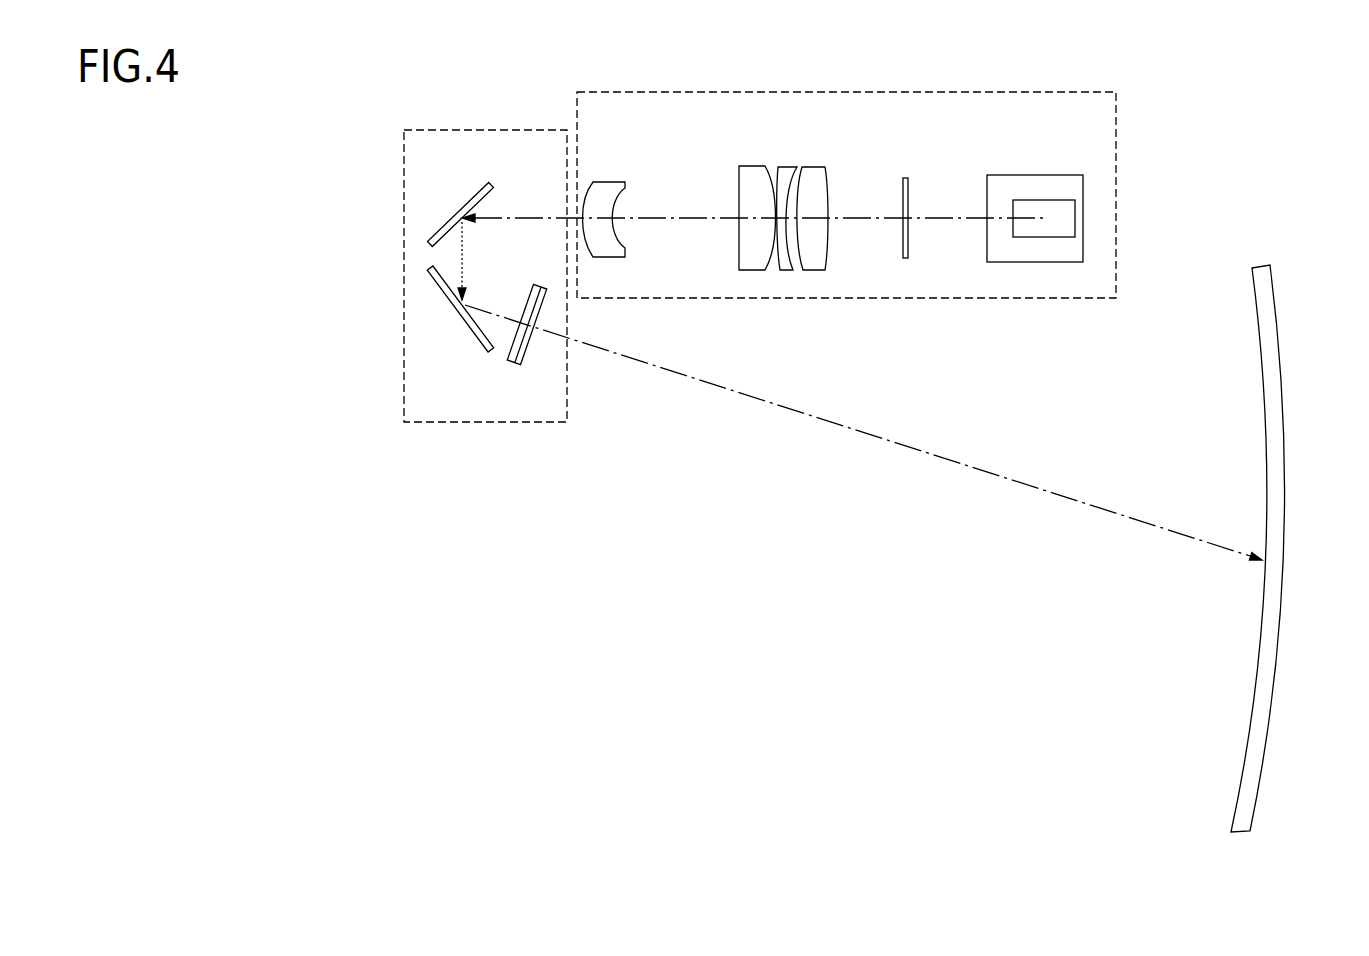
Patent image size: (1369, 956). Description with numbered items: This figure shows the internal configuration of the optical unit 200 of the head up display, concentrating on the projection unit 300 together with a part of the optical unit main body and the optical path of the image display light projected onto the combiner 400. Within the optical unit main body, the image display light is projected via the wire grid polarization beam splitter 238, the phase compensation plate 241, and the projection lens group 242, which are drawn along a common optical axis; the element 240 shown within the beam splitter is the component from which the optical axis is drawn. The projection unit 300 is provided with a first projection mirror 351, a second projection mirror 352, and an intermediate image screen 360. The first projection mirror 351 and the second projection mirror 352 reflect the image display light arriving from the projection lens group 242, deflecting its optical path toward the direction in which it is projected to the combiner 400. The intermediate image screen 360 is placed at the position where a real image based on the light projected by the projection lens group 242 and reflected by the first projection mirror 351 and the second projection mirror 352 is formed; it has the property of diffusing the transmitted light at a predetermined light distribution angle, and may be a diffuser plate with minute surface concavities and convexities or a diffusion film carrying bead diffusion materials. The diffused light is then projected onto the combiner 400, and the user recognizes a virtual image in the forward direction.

The optical unit 200 is at (1118, 120).
The wire grid polarization beam splitter 238 is at (1057, 186).
The display panel 240 is at (1058, 218).
The phase compensation plate 241 is at (905, 178).
The projection lens group 242 is at (585, 158).
The projection unit 300 is at (483, 423).
The first projection mirror 351 is at (477, 193).
The second projection mirror 352 is at (469, 318).
The intermediate image screen 360 is at (521, 366).
The combiner 400 is at (1283, 352).